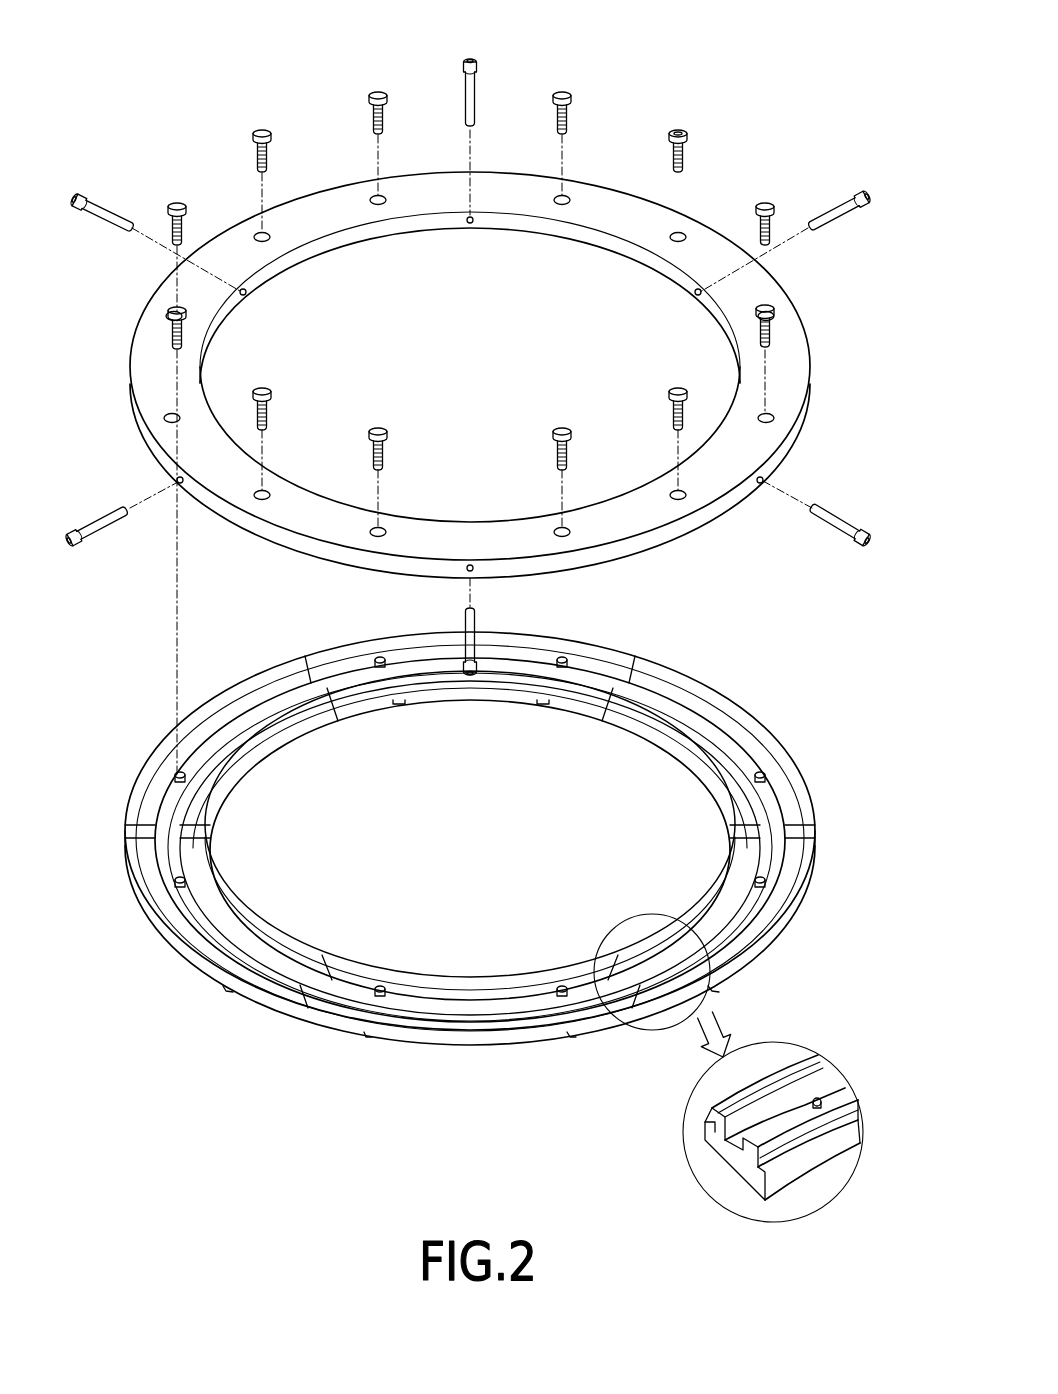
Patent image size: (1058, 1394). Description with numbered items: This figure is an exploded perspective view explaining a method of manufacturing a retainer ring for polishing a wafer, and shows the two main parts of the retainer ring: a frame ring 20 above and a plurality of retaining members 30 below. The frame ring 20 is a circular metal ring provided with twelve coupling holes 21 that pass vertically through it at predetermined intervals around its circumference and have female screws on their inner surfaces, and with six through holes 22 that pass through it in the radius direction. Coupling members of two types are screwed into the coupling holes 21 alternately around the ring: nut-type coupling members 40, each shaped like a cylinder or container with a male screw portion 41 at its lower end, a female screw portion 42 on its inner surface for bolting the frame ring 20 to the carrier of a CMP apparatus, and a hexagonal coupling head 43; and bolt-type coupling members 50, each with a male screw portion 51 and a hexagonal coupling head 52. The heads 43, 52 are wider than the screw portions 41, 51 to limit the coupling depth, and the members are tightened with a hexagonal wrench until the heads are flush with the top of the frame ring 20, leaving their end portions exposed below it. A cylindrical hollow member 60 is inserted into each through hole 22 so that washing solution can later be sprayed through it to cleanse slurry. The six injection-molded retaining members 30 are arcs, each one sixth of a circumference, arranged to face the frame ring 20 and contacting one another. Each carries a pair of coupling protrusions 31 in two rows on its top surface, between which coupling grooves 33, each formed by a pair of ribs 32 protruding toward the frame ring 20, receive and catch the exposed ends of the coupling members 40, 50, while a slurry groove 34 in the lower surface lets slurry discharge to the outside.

The frame ring 20 is at (142, 297).
The coupling holes 21 is at (378, 197).
The through holes 22 is at (246, 295).
The retaining members 30 is at (486, 927).
The coupling protrusions 31 is at (773, 1093).
The ribs 32 is at (815, 1098).
The coupling grooves 33 is at (816, 1098).
The slurry groove 34 is at (400, 703).
The nut-type coupling member 40 is at (681, 114).
The male screw portion 41 is at (671, 158).
The female screw portion 42 is at (679, 128).
The coupling head 43 is at (670, 130).
The bolt-type coupling member 50 is at (806, 206).
The male screw portion 51 is at (772, 240).
The coupling head 52 is at (768, 204).
The hollow member 60 is at (457, 79).